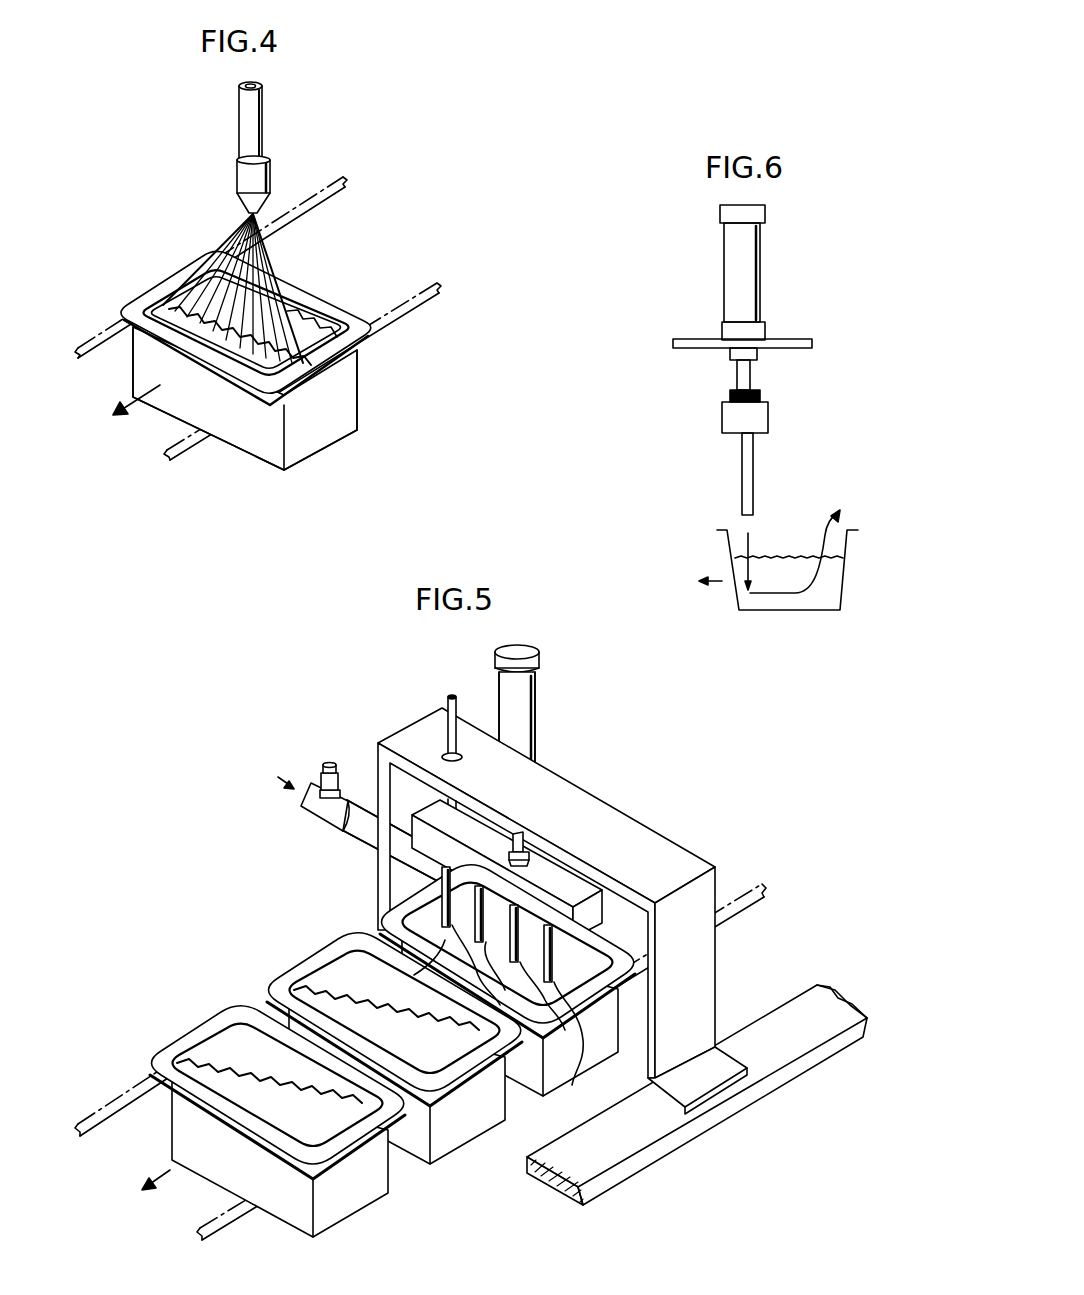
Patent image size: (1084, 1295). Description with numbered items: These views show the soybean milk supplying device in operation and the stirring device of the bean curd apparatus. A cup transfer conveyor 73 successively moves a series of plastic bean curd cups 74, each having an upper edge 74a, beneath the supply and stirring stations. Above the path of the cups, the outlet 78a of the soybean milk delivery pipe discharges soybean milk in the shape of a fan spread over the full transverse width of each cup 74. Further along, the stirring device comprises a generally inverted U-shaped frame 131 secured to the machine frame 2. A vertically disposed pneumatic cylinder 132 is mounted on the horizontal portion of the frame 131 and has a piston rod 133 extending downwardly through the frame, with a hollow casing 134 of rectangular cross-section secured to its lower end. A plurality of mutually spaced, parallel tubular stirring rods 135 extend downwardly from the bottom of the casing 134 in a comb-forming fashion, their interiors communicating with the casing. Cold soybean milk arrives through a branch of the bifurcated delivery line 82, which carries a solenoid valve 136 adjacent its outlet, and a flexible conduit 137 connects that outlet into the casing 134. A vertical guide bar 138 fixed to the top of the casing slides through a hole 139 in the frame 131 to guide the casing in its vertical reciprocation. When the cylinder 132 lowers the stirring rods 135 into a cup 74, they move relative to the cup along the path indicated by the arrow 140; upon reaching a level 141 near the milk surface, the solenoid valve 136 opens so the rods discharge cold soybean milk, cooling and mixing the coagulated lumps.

In FIG. 5, the machine frame 2 is at (541, 1190).
In FIG. 4, the cup transfer conveyor 73 is at (205, 450).
In FIG. 5, the cup transfer conveyor 73 is at (352, 1220).
In FIG. 4, the bean curd cup 74 is at (150, 366).
In FIG. 6, the bean curd cup 74 is at (847, 573).
In FIG. 5, the bean curd cup 74 is at (385, 1177).
In FIG. 5, the upper edge 74a is at (267, 1027).
In FIG. 4, the outlet 78a is at (246, 207).
In FIG. 5, the bifurcated delivery line 82 is at (303, 806).
In FIG. 6, the inverted U-shaped frame 131 is at (767, 341).
In FIG. 5, the inverted U-shaped frame 131 is at (647, 830).
In FIG. 6, the pneumatic cylinder 132 is at (763, 258).
In FIG. 5, the pneumatic cylinder 132 is at (538, 708).
In FIG. 6, the piston rod 133 is at (753, 370).
In FIG. 5, the piston rod 133 is at (528, 852).
In FIG. 6, the hollow casing 134 is at (765, 418).
In FIG. 5, the hollow casing 134 is at (575, 840).
In FIG. 6, the stirring rods 135 is at (750, 467).
In FIG. 5, the stirring rods 135 is at (440, 890).
In FIG. 5, the solenoid valve 136 is at (320, 792).
In FIG. 5, the flexible conduit 137 is at (353, 837).
In FIG. 5, the vertical guide bar 138 is at (447, 707).
In FIG. 5, the hole 139 is at (447, 750).
In FIG. 6, the arrow 140 is at (827, 510).
In FIG. 6, the level 141 is at (750, 537).